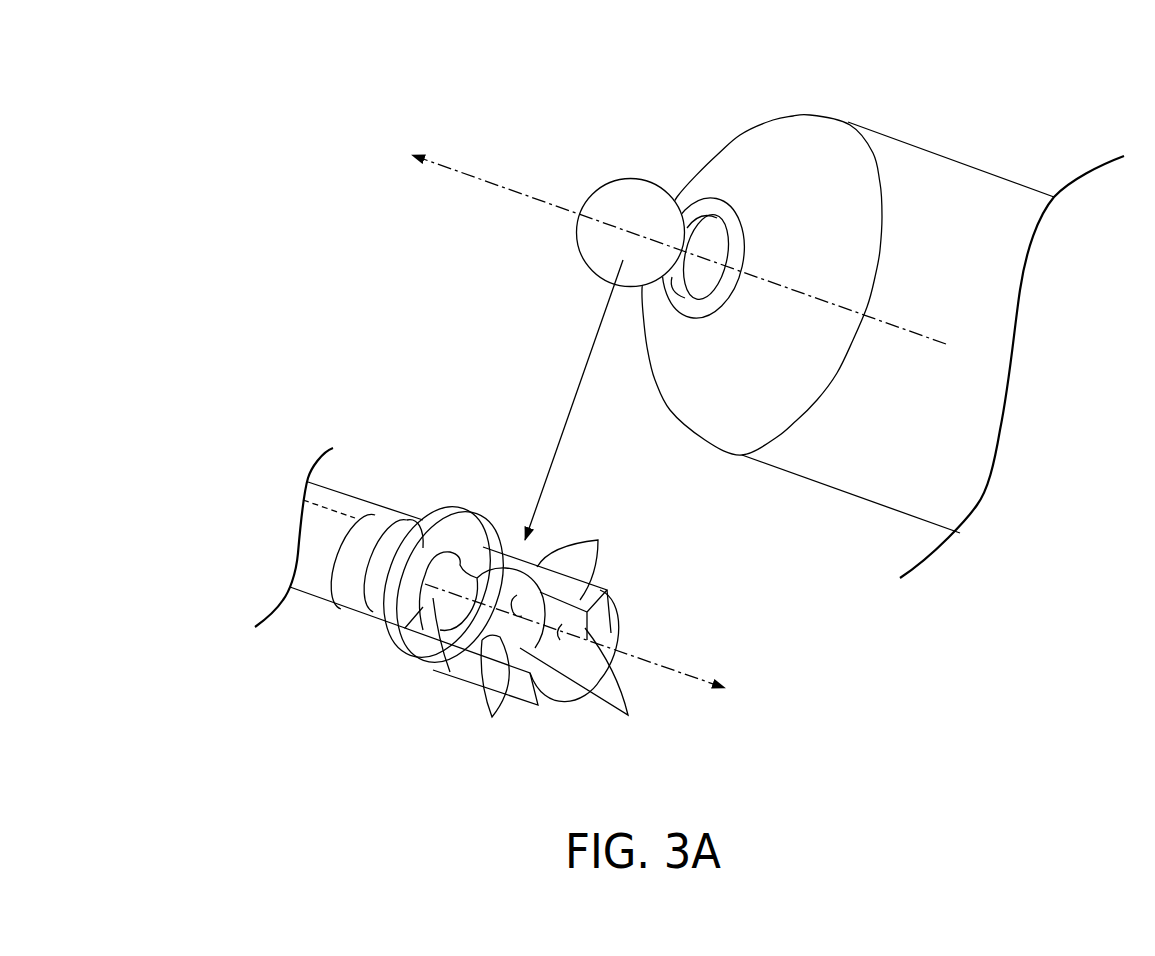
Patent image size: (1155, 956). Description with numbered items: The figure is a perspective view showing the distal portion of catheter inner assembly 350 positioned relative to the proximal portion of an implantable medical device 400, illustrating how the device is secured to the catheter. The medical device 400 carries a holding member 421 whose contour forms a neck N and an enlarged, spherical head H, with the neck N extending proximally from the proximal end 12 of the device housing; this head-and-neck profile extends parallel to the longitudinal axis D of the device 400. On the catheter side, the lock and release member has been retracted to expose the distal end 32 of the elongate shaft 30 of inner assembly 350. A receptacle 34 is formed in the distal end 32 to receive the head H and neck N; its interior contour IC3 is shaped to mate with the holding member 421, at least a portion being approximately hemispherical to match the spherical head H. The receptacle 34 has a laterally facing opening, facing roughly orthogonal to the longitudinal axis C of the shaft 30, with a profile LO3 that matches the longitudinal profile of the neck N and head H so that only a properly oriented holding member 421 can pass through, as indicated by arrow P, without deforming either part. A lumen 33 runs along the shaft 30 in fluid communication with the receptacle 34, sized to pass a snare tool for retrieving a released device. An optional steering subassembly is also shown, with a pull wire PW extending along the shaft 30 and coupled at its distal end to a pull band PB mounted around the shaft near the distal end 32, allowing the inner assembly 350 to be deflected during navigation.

The medical device 400 is at (947, 100).
The proximal end of device housing 12 is at (775, 175).
The longitudinal axis of device D is at (492, 183).
The holding member 421 is at (553, 265).
The enlarged head H is at (625, 195).
The neck N is at (712, 243).
The arrow P is at (610, 406).
The catheter inner assembly 350 is at (317, 688).
The pull wire PW is at (318, 503).
The pull band PB is at (357, 602).
The longitudinal axis of shaft C is at (675, 670).
The elongate shaft 30 is at (413, 483).
The distal end of shaft 32 is at (453, 675).
The lumen 33 is at (453, 667).
The receptacle 34 is at (505, 583).
The lateral opening profile LO3 is at (597, 558).
The interior contour IC3 is at (560, 630).